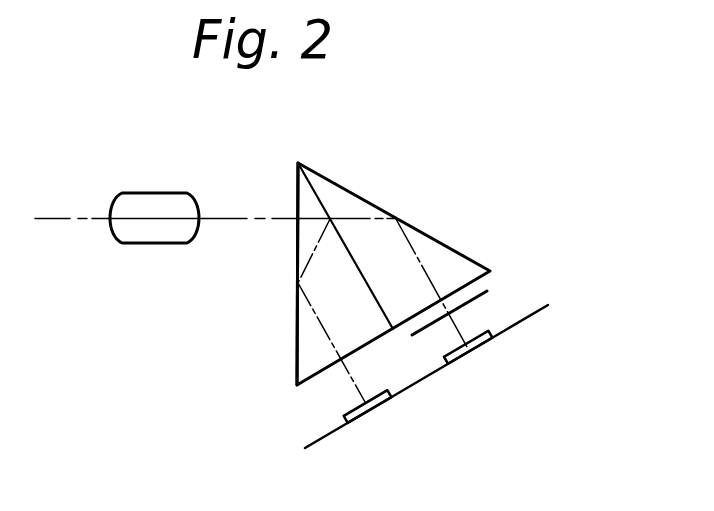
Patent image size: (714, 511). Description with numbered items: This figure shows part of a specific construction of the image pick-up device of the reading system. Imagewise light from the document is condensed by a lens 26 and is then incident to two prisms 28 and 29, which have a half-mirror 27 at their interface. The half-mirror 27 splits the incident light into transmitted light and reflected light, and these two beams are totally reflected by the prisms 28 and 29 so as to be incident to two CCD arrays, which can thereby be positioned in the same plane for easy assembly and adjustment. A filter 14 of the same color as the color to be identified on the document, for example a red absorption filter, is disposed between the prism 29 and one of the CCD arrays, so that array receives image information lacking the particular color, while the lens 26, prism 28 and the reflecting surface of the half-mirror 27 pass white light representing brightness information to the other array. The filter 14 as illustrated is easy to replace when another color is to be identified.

The filter 14 is at (480, 294).
The lens 26 is at (173, 193).
The half-mirror 27 is at (318, 198).
The prism 28 is at (298, 252).
The prism 29 is at (441, 240).